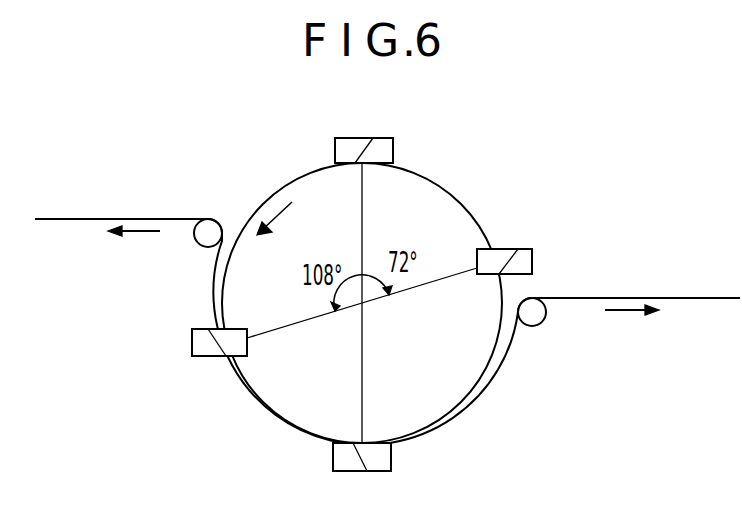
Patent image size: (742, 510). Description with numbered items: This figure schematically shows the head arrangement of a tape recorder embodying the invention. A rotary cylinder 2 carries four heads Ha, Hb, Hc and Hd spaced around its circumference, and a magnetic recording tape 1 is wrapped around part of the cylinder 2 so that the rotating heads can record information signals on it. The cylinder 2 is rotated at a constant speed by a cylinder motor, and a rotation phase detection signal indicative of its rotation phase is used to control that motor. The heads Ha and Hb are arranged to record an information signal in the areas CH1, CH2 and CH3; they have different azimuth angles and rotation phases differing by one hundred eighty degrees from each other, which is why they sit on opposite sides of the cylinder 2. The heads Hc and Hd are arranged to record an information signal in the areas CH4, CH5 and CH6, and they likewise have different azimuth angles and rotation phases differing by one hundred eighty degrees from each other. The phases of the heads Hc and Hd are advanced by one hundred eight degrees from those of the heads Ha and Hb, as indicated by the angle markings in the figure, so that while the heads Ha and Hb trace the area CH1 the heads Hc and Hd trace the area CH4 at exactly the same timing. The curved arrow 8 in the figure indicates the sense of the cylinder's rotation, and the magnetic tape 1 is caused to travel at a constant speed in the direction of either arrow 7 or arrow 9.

The magnetic recording tape 1 is at (683, 298).
The rotary cylinder 2 is at (455, 208).
The arrow 7 is at (627, 311).
The drum rotation direction 8 is at (272, 215).
The arrow 9 is at (137, 232).
The head Ha is at (391, 460).
The head Hb is at (393, 150).
The head Hc is at (192, 345).
The head Hd is at (517, 249).